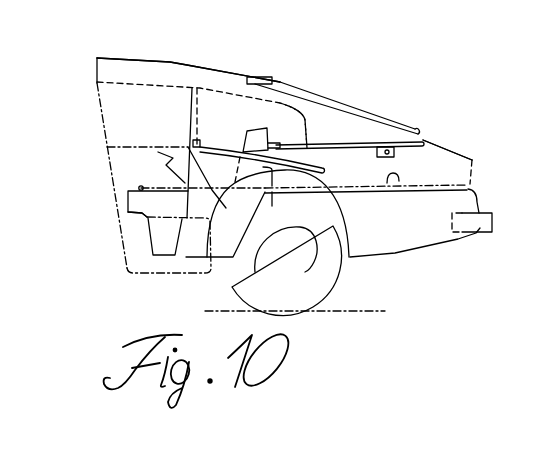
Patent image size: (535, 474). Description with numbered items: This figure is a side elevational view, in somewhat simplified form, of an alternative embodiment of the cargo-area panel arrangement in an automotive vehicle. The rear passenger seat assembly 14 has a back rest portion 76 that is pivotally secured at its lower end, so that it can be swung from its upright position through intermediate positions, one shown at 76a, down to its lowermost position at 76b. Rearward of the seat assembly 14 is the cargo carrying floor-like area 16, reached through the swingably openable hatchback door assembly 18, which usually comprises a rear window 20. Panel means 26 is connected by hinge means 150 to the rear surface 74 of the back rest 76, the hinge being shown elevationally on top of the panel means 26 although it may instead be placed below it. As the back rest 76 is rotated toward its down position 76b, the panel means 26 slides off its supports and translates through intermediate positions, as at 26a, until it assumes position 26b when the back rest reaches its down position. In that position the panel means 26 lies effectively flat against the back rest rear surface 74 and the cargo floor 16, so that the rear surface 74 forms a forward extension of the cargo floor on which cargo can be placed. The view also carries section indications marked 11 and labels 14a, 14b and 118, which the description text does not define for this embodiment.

The section line 11- 11 is at (382, 87).
The rear passenger seat assembly 14 is at (245, 127).
The upper body portion 14a is at (160, 144).
The lower body portion 14b is at (120, 201).
The cargo carrying floor-like area 16 is at (387, 184).
The hatchback door assembly 18 is at (432, 142).
The rear window 20 is at (362, 120).
The panel means 26 is at (365, 139).
The intermediate position of panel means 26a is at (297, 182).
The final position of panel means 26b is at (151, 181).
The rear surface of back rest 74 is at (267, 204).
The back rest portion 76 is at (258, 131).
The intermediate position of back rest 76a is at (180, 140).
The down position of back rest 76b is at (137, 216).
The safety belt 118 is at (368, 179).
The hinge means 150 is at (268, 143).